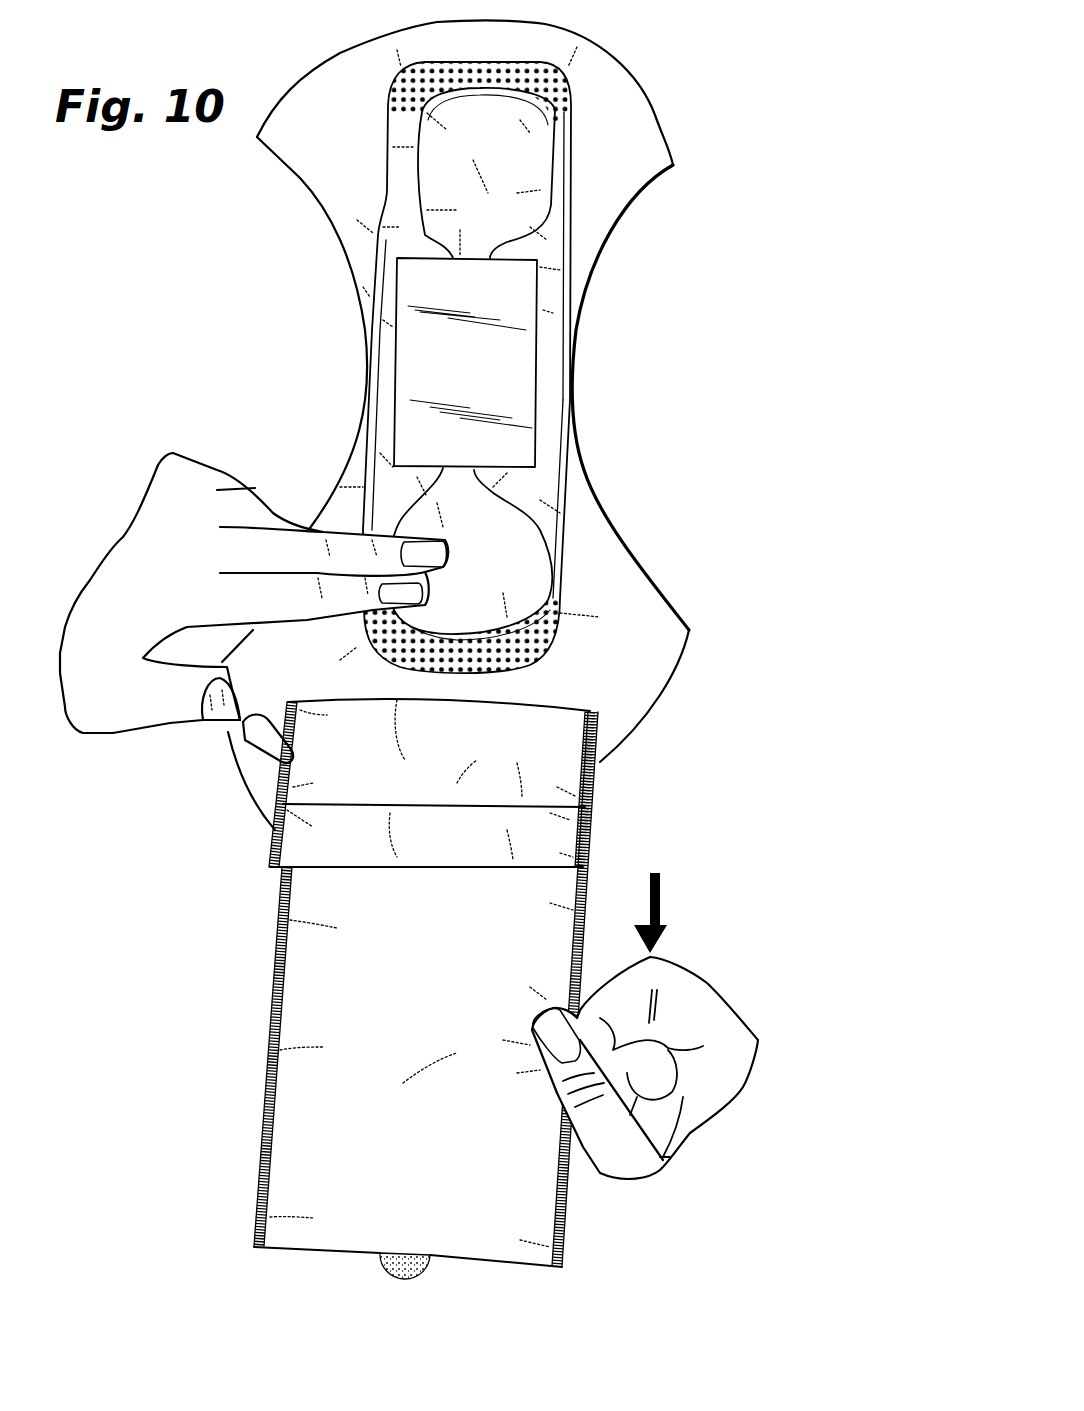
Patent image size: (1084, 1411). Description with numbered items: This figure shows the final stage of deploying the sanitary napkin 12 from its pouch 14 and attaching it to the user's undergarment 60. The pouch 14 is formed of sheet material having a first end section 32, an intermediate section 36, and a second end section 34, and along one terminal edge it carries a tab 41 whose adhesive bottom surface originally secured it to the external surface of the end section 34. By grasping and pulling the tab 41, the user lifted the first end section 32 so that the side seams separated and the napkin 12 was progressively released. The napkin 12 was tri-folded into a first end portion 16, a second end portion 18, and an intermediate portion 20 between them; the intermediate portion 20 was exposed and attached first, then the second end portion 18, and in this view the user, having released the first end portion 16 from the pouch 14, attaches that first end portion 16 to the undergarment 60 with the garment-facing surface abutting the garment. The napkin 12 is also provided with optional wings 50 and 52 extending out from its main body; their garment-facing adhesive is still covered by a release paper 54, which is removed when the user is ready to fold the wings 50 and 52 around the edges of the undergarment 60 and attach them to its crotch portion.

The undergarment 60 is at (628, 118).
The sanitary napkin 12 is at (373, 152).
The wing 50 is at (386, 360).
The wing 52 is at (548, 300).
The intermediate portion 20 is at (550, 384).
The second end portion 18 is at (510, 170).
The first end portion 16 is at (510, 568).
The release paper 54 is at (478, 377).
The pouch 14 is at (253, 968).
The second end section 34 is at (458, 755).
The intermediate section 36 is at (447, 940).
The first end section 32 is at (423, 1163).
The tab 41 is at (383, 1268).